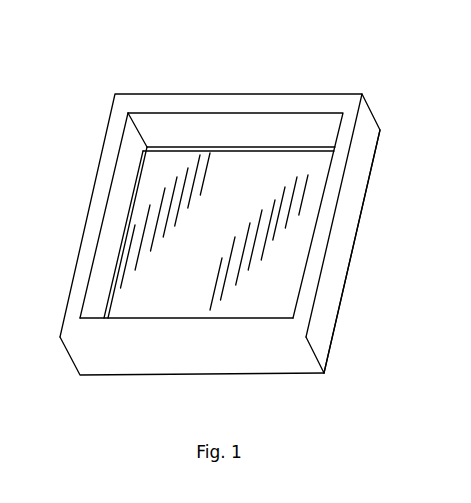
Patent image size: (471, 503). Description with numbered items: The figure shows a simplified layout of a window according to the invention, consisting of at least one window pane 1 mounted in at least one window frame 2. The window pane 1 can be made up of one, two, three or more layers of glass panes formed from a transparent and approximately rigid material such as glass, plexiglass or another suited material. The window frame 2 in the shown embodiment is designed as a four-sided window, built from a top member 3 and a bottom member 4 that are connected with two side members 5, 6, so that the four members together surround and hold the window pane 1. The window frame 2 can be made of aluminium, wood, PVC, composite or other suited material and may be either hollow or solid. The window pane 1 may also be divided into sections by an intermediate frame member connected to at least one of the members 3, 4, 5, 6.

The window pane 1 is at (249, 163).
The window frame 2 is at (308, 100).
The top member 3 is at (145, 100).
The bottom member 4 is at (100, 328).
The side member 5 is at (97, 222).
The side member 6 is at (345, 235).